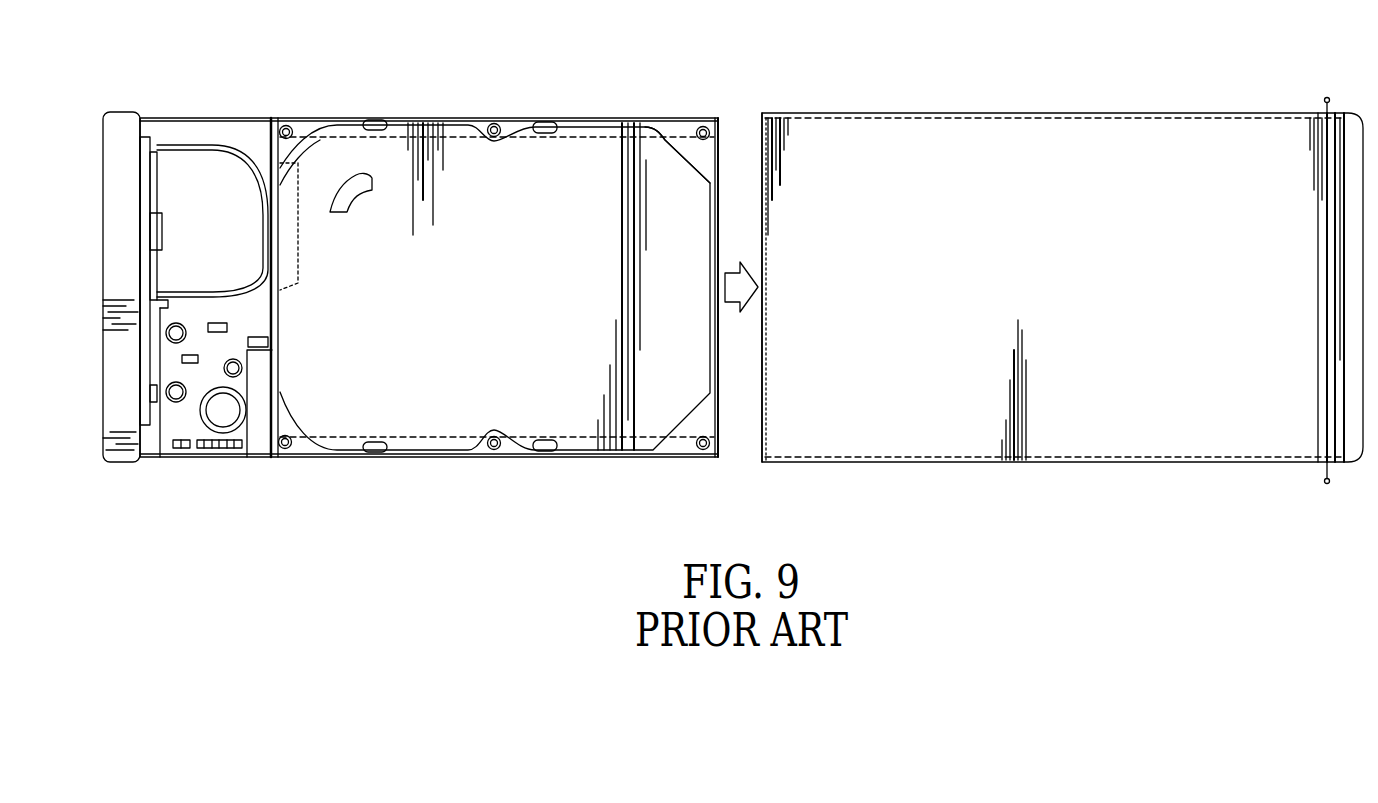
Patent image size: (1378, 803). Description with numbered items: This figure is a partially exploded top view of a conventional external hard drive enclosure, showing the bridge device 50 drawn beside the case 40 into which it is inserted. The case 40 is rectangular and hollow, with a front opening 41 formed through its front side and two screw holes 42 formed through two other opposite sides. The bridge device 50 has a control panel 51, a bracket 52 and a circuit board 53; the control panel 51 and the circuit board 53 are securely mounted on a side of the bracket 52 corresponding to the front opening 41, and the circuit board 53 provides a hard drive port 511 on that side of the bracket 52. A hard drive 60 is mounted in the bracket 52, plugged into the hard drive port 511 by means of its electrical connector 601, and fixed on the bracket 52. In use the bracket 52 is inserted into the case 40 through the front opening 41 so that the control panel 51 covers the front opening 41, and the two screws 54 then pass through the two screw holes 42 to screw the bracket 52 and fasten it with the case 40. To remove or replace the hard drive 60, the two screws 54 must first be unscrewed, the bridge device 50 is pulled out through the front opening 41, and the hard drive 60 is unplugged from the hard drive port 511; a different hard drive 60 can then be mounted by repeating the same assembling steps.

The case 40 is at (995, 132).
The front opening 41 is at (762, 125).
The screw holes 42 is at (1333, 113).
The bridge device 50 is at (262, 92).
The control panel 51 is at (120, 118).
The hard drive port 511 is at (282, 172).
The bracket 52 is at (508, 122).
The circuit board 53 is at (185, 130).
The screws 54 is at (1324, 100).
The hard drive 60 is at (645, 150).
The electrical connector 601 is at (302, 228).